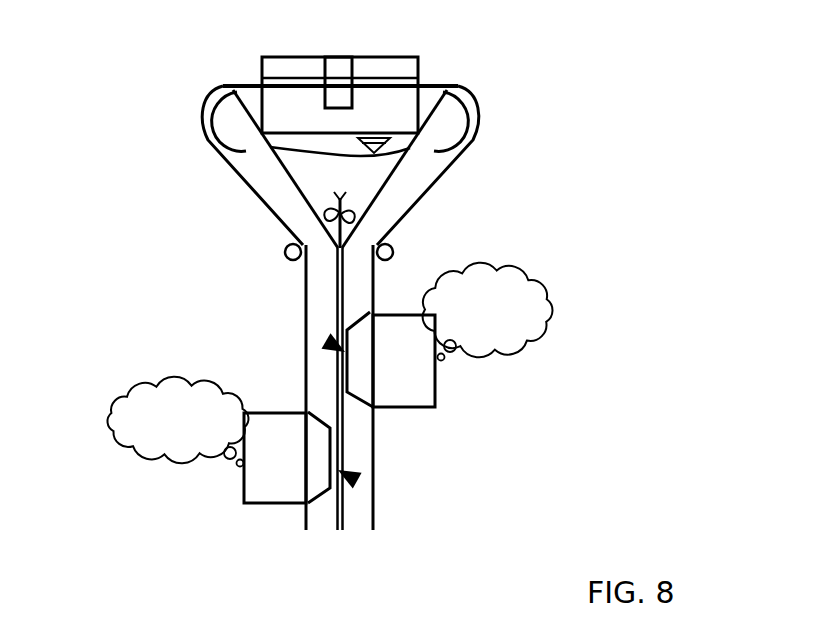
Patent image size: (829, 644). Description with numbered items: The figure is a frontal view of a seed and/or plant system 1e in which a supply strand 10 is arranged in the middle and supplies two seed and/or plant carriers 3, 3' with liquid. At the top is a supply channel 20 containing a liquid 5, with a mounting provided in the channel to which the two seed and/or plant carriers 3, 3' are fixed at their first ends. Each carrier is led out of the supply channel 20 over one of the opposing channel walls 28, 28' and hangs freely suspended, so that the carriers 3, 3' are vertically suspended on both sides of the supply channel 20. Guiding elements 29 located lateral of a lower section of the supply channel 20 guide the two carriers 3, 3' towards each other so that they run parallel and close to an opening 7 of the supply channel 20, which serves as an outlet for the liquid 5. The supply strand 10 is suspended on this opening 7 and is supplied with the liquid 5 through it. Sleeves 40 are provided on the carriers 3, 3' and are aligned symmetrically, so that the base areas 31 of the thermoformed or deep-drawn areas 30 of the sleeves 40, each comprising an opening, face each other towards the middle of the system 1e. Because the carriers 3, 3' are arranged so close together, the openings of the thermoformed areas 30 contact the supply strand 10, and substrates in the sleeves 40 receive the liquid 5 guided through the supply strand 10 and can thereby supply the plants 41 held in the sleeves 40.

The seed and/or plant system 1e is at (608, 106).
The channel wall 28 is at (396, 79).
The channel wall 28' is at (295, 100).
The supply channel 20 is at (390, 185).
The liquid 5 is at (310, 180).
The opening 7 is at (350, 245).
The guiding elements 29 is at (285, 250).
The supply strand 10 is at (343, 297).
The seed and/or plant carrier 3 is at (441, 387).
The seed and/or plant carrier 3' is at (219, 387).
The sleeves 40 is at (413, 383).
The thermoformed or deep-drawn areas 30 is at (358, 385).
The base areas 31 is at (328, 342).
The plants 41 is at (513, 302).